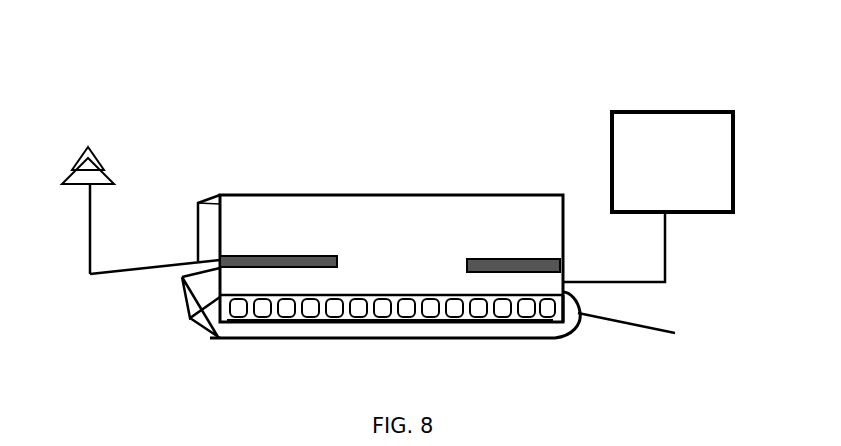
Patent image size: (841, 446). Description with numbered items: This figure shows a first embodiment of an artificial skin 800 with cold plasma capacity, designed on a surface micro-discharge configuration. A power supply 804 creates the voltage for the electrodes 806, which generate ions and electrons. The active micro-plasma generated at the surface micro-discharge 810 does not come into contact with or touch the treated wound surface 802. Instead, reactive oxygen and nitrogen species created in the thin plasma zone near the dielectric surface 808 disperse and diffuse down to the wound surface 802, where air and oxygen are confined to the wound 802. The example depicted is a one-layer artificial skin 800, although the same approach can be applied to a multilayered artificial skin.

The artificial skin 800 is at (114, 74).
The wound surface 802 is at (552, 342).
The power supply 804 is at (730, 133).
The electrodes 806 is at (462, 267).
The dielectric surface 808 is at (272, 208).
The surface micro-discharge 810 is at (317, 312).